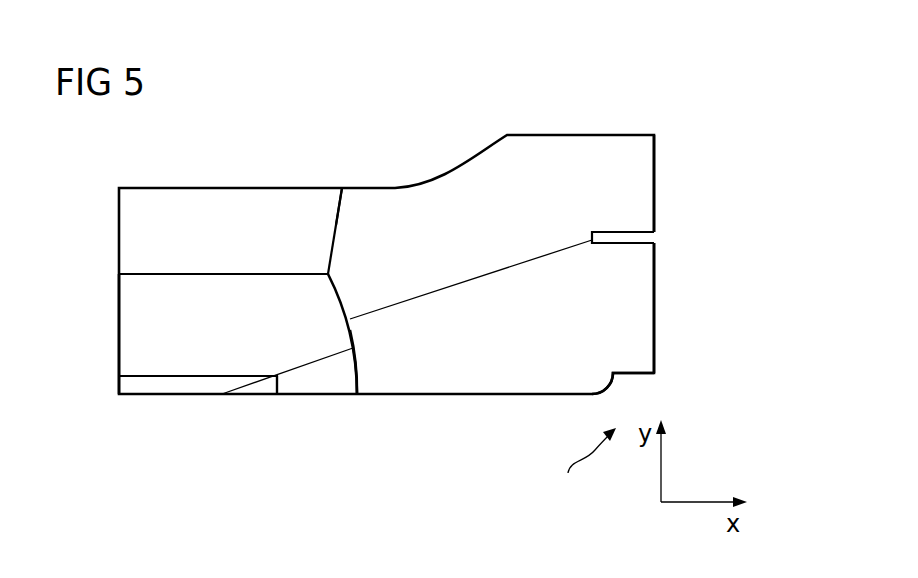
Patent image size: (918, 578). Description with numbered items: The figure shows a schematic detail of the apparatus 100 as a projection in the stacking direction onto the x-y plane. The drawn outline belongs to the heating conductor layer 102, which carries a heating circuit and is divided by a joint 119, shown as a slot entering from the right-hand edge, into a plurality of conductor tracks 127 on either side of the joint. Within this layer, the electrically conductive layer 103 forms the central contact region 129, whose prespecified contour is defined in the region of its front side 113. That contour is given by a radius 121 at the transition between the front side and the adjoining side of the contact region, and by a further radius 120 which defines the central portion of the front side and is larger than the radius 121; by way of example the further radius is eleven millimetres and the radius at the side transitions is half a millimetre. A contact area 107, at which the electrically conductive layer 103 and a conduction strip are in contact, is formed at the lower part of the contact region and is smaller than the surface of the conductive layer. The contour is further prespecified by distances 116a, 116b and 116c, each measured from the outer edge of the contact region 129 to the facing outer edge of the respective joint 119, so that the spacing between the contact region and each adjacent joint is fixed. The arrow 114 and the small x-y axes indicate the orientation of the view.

The apparatus 100 is at (372, 154).
The heating conductor layer 102 is at (192, 188).
The electrically conductive layer 103 is at (133, 306).
The contact area 107 is at (158, 386).
The front side 113 is at (359, 360).
The flow direction 114 is at (582, 468).
The distance 116a is at (488, 390).
The distance 116b is at (527, 265).
The distance 116c is at (341, 220).
The joint 119 is at (633, 242).
The further radius 120 is at (285, 375).
The radius 121 is at (316, 290).
The conductor track 127 is at (635, 203).
The contact region 129 is at (340, 386).